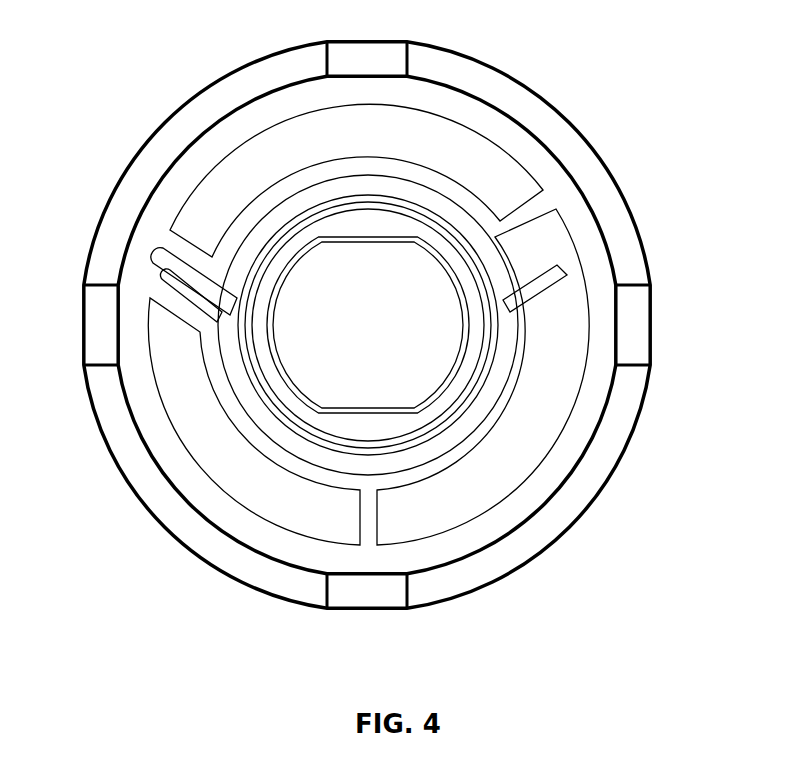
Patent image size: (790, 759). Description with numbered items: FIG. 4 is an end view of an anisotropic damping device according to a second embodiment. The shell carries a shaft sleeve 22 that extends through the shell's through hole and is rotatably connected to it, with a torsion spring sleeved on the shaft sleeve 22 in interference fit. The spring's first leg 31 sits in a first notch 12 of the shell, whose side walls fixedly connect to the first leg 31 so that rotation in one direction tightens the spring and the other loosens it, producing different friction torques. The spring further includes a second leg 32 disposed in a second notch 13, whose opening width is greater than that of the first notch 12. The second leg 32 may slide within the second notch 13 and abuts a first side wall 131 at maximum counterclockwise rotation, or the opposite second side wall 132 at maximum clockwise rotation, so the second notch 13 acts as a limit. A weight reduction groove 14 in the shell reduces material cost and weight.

The first notch 12 is at (200, 292).
The second notch 13 is at (572, 310).
The first side wall 131 is at (582, 173).
The second side wall 132 is at (608, 376).
The weight reduction groove 14 is at (308, 135).
The shaft sleeve 22 is at (367, 420).
The first leg 31 is at (235, 307).
The second leg 32 is at (560, 268).